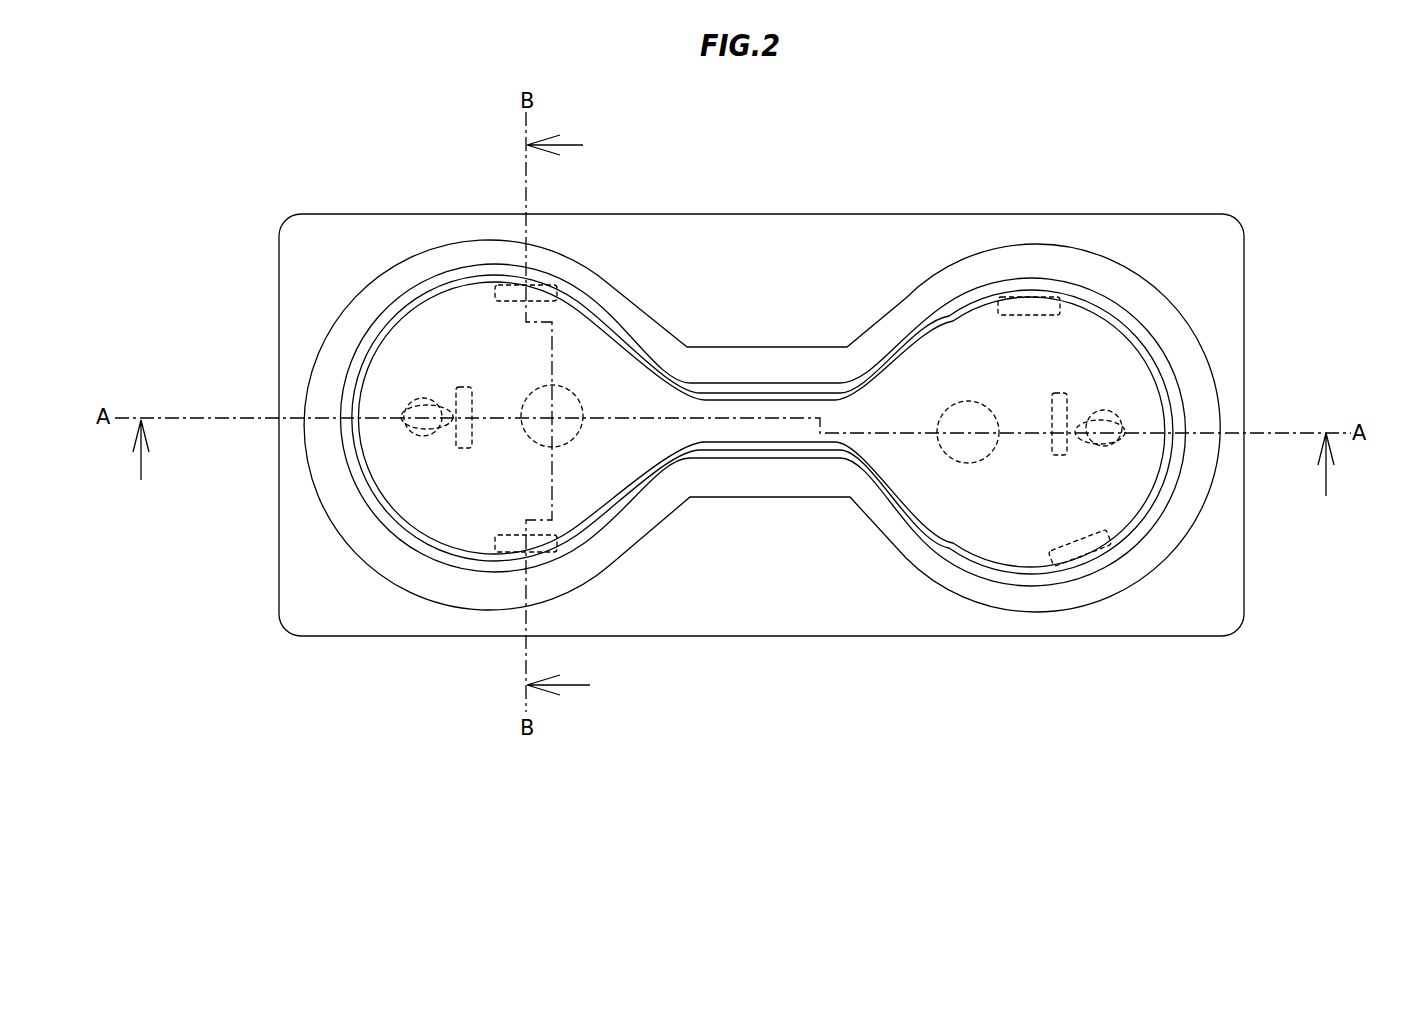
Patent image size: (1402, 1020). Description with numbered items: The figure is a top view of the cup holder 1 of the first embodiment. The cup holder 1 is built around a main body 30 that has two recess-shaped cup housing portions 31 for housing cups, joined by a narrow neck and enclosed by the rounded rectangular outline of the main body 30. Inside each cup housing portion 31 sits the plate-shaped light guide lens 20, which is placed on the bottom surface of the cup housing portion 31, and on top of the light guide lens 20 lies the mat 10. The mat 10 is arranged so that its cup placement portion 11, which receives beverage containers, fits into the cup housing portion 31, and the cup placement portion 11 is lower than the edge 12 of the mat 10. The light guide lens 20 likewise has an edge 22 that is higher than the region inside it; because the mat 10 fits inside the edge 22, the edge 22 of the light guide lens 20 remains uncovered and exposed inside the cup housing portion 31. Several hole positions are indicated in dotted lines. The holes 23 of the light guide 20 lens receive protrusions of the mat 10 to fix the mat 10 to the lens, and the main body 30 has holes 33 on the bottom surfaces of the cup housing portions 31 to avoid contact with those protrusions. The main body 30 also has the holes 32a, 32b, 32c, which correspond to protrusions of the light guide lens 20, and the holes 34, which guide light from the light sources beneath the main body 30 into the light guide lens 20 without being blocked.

The cup holder 1 is at (1123, 116).
The mat 10 is at (792, 438).
The cup placement portion 11 is at (1131, 525).
The edge 12 is at (1166, 472).
The light guide lens 20 is at (784, 522).
The edge 22 is at (950, 565).
The holes 23 is at (410, 425).
The main body 30 is at (778, 201).
The cup housing portions 31 is at (670, 463).
The hole 32a is at (553, 290).
The hole 32b is at (458, 450).
The hole 32c is at (505, 548).
The holes 33 is at (420, 440).
The holes 34 is at (565, 445).